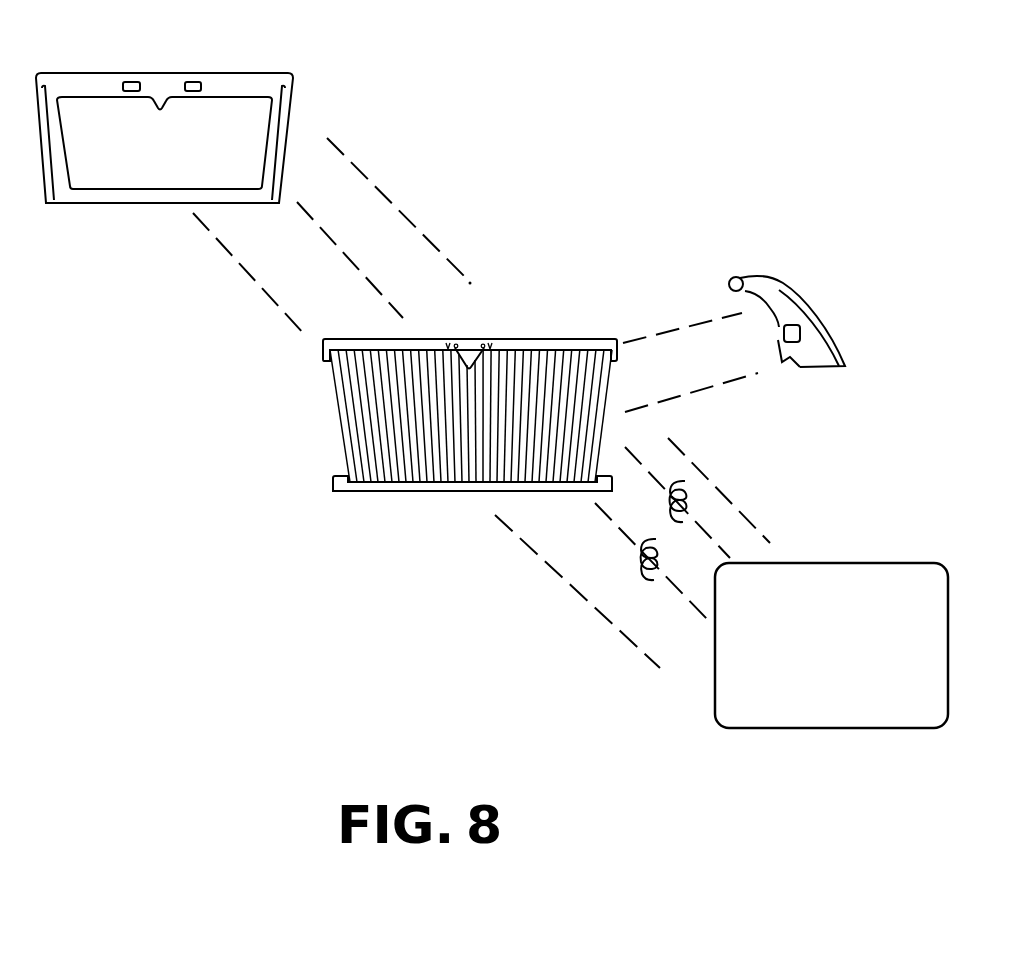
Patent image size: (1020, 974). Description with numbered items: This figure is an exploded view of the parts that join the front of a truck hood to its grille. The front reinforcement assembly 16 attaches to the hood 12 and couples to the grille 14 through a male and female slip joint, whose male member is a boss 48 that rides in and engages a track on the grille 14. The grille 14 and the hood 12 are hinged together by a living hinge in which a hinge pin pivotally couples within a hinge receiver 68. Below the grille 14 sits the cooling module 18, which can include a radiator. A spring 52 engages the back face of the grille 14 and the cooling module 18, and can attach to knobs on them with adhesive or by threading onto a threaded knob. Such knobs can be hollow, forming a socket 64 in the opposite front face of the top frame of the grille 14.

The hood 12 is at (787, 292).
The grille 14 is at (355, 430).
The front reinforcement assembly 16 is at (264, 80).
The cooling module 18 is at (838, 661).
The boss 48 is at (190, 82).
The spring 52 is at (684, 495).
The socket 64 is at (483, 341).
The hinge receiver 68 is at (800, 330).